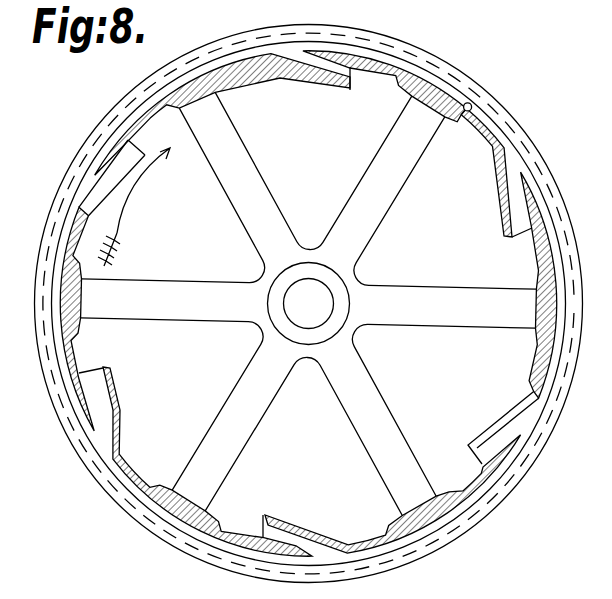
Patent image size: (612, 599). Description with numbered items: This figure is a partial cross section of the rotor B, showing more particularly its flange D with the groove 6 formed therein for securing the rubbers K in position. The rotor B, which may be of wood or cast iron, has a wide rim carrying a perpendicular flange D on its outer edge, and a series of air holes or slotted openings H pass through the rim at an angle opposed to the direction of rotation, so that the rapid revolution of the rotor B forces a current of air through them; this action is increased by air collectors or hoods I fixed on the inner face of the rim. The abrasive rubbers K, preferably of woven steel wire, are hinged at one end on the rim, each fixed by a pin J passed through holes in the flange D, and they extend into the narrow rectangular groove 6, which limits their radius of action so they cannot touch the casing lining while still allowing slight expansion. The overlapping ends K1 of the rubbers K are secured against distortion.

The rotor B is at (309, 303).
The overlapping ends of the rubbers K1 is at (405, 55).
The flange D is at (499, 130).
The rubbers K is at (308, 303).
The pin J is at (469, 112).
The groove 6 is at (459, 86).
The air holes or slotted openings H is at (292, 50).
The air collectors or hoods I is at (337, 92).